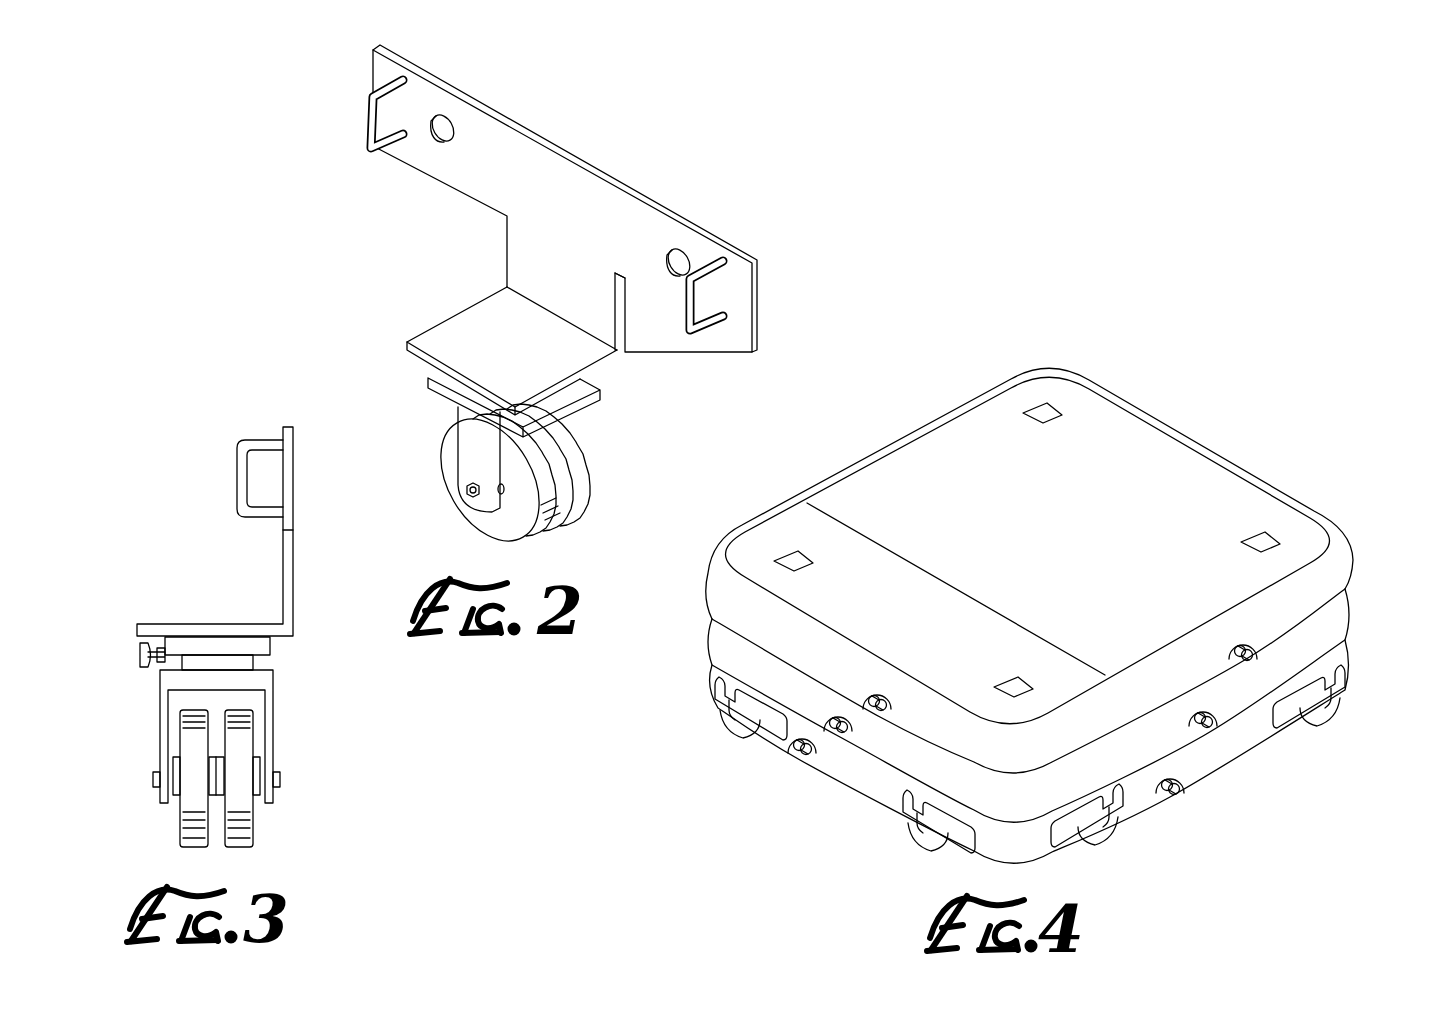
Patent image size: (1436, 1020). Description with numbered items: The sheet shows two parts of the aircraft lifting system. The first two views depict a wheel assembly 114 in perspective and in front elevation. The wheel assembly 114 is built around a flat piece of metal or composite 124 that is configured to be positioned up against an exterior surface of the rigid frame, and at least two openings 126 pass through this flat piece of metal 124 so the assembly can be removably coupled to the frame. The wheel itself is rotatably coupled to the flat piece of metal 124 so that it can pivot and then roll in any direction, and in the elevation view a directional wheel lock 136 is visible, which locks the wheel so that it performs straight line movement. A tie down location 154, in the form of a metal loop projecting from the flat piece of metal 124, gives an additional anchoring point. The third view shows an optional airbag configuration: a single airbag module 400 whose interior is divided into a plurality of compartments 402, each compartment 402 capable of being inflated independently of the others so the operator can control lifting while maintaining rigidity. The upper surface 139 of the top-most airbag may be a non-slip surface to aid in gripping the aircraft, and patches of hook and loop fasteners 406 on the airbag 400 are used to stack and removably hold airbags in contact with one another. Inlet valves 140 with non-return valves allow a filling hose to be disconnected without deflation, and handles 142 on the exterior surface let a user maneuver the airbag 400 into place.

In FIG. 2, the wheel assembly 114 is at (681, 144).
In FIG. 3, the wheel assembly 114 is at (160, 466).
In FIG. 2, the flat piece of metal or composite 124 is at (578, 214).
In FIG. 3, the flat piece of metal or composite 124 is at (283, 575).
In FIG. 2, the openings 126 is at (441, 142).
In FIG. 2, the tie down location 154 is at (370, 125).
In FIG. 3, the tie down location 154 is at (262, 440).
In FIG. 3, the directional wheel lock 136 is at (140, 655).
In FIG. 4, the airbag module 400 is at (1235, 410).
In FIG. 4, the upper surface 139 is at (931, 496).
In FIG. 4, the interior compartments 402 is at (1340, 565).
In FIG. 4, the hook and loop fasteners 406 is at (793, 557).
In FIG. 4, the inlet valves 140 is at (1248, 660).
In FIG. 4, the handle 142 is at (733, 728).